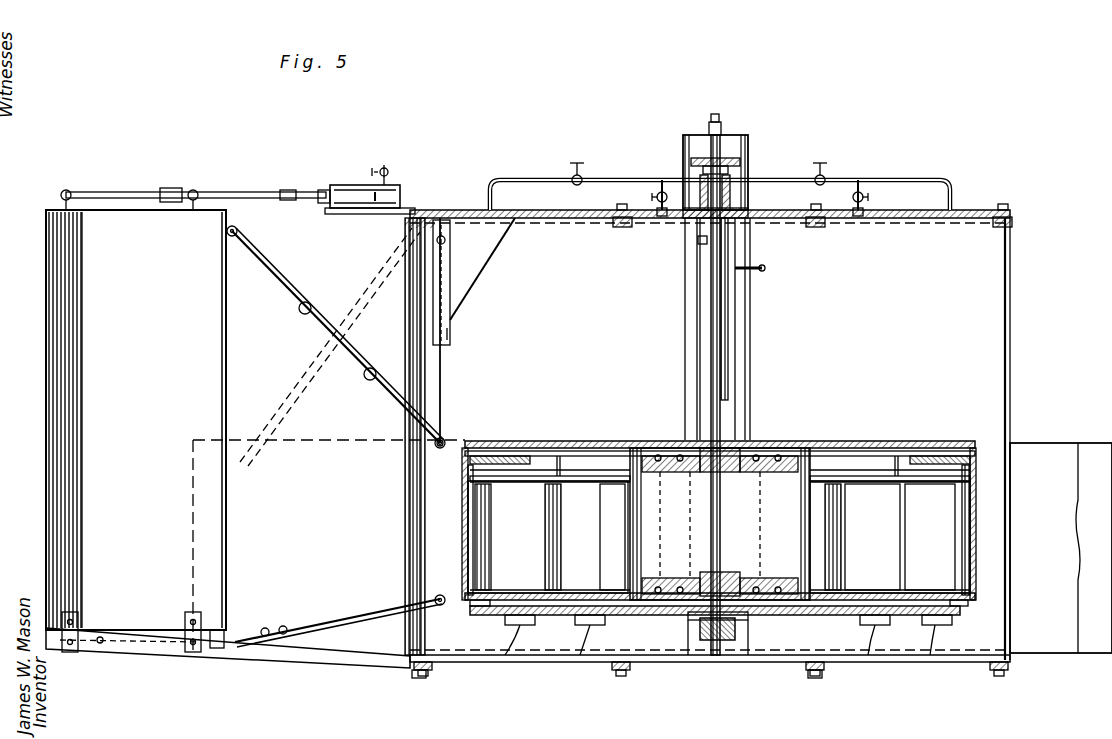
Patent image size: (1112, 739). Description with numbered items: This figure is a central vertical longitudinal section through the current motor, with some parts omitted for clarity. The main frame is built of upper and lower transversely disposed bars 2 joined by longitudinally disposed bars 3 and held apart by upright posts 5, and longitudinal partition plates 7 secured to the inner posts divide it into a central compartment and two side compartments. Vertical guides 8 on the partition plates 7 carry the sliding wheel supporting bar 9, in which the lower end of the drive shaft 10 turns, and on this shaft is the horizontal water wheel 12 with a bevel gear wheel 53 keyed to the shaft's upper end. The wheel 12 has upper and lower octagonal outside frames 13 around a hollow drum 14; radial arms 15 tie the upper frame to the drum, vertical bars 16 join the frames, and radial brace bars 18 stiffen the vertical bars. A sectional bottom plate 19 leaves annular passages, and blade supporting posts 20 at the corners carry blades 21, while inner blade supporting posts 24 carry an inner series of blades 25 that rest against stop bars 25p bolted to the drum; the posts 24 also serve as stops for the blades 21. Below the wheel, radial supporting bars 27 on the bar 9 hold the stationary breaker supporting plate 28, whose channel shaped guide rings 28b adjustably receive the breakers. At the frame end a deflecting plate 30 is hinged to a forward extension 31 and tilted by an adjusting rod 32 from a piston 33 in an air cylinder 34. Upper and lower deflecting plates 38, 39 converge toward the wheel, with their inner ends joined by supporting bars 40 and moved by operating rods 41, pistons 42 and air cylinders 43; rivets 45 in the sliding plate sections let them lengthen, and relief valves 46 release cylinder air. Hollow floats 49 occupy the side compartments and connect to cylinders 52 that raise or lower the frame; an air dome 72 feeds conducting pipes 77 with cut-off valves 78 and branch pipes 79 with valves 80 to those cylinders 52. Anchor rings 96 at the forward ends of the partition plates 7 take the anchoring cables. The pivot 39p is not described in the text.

The transversely disposed bars 2 is at (620, 230).
The longitudinally disposed bars 3 is at (915, 225).
The upright posts 5 is at (416, 678).
The partition plates 7 is at (730, 356).
The vertical guides 8 is at (690, 334).
The wheel supporting bar 9 is at (714, 662).
The drive shaft 10 is at (722, 426).
The water wheel 12 is at (720, 437).
The outside frames 13 is at (480, 440).
The drum 14 is at (748, 472).
The radial arms 15 is at (520, 450).
The vertical bars 16 is at (462, 543).
The radial brace bars 18 is at (525, 482).
The bottom plate 19 is at (500, 590).
The blade supporting posts 20 is at (510, 458).
The blades 21 is at (496, 548).
The blade supporting posts 24 is at (720, 468).
The inner series of blades 25 is at (562, 546).
The stop bars 25p is at (625, 548).
The radial supporting bars 27 is at (688, 620).
The breaker supporting plate 28 is at (505, 622).
The channel shaped guide rings 28b is at (932, 658).
The deflecting plates 30 is at (47, 256).
The forwardly projecting extensions 31 is at (95, 652).
The adjusting rods 32 is at (158, 193).
The pistons 33 is at (372, 192).
The air cylinders 34 is at (400, 192).
The upper deflecting plate 38 is at (305, 312).
The lower deflecting plate 39 is at (318, 622).
The pivot 39p is at (452, 440).
The supporting bars 40 is at (425, 492).
The operating rods 41 is at (443, 392).
The pistons 42 is at (450, 256).
The air cylinders 43 is at (452, 302).
The rivets 45 is at (305, 316).
The relief valves 46 is at (388, 168).
The floats 49 is at (192, 488).
The cylinders 52 is at (728, 330).
The bevel gear wheel 53 is at (750, 162).
The air dome 72 is at (722, 140).
The conducting pipes 77 is at (606, 181).
The cut-off valves 78 is at (578, 163).
The branch pipes 79 is at (658, 224).
The valves 80 is at (660, 184).
The anchor rings 96 is at (206, 652).